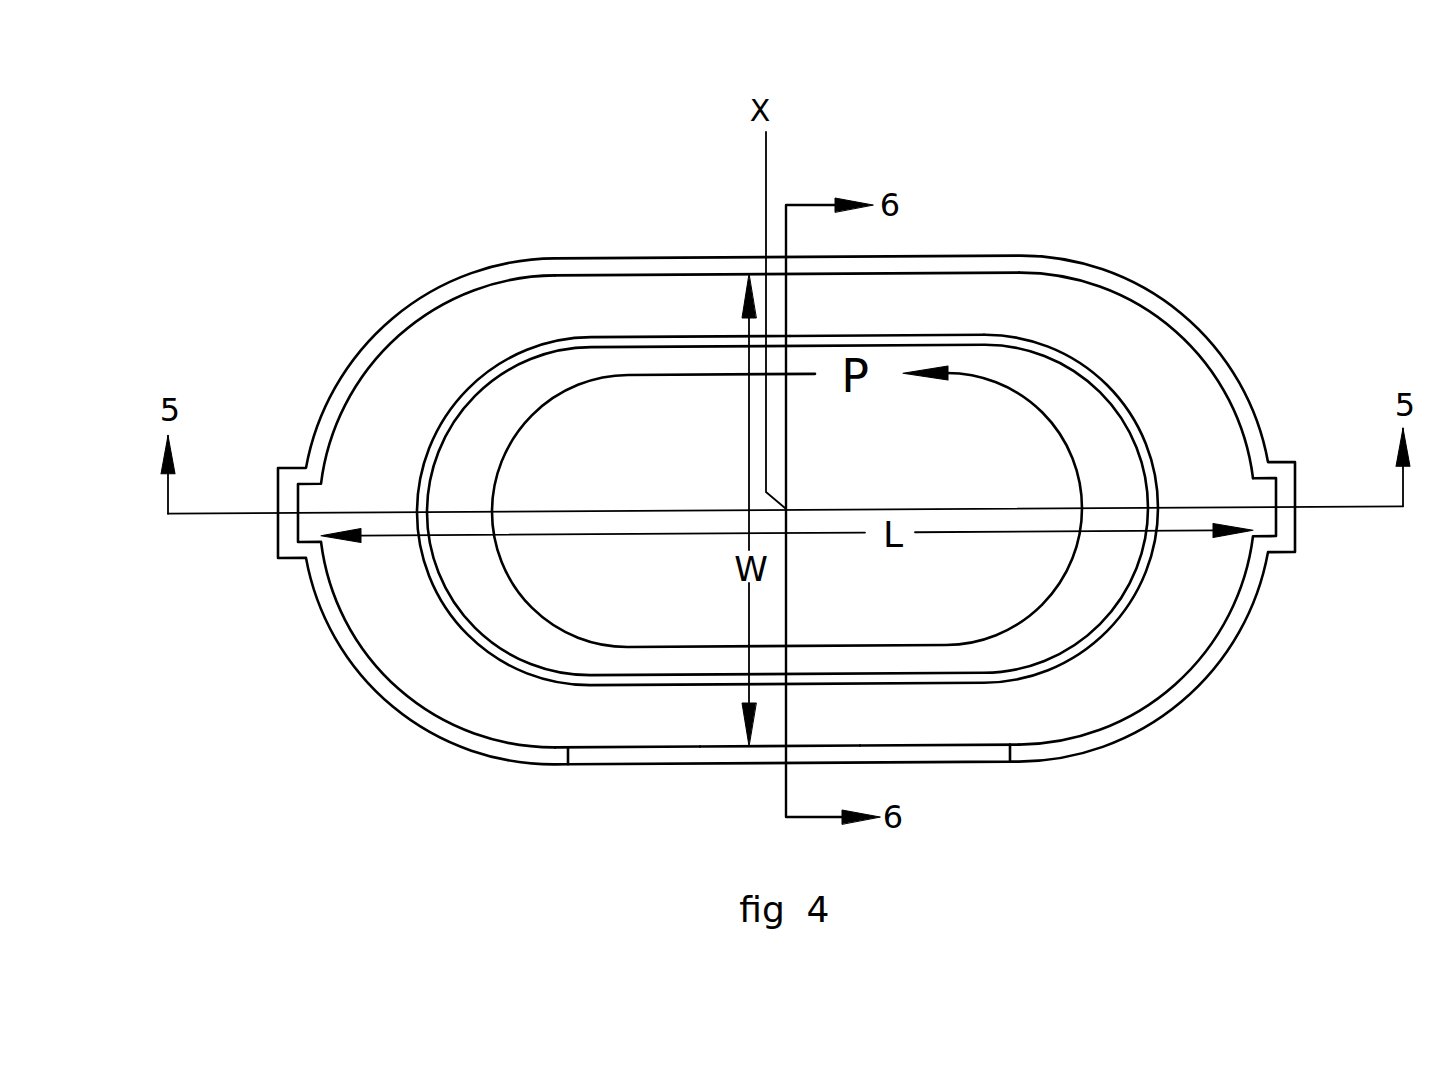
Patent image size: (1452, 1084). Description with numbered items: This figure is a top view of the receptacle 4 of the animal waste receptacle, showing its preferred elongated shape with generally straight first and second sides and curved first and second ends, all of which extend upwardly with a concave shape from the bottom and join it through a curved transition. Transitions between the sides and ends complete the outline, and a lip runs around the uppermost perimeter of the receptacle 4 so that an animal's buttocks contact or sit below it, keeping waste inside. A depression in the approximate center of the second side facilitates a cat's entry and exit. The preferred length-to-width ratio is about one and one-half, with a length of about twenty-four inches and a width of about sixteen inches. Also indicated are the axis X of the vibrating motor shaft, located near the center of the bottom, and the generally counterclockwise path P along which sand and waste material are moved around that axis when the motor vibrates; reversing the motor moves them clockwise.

The receptacle 4 is at (296, 688).